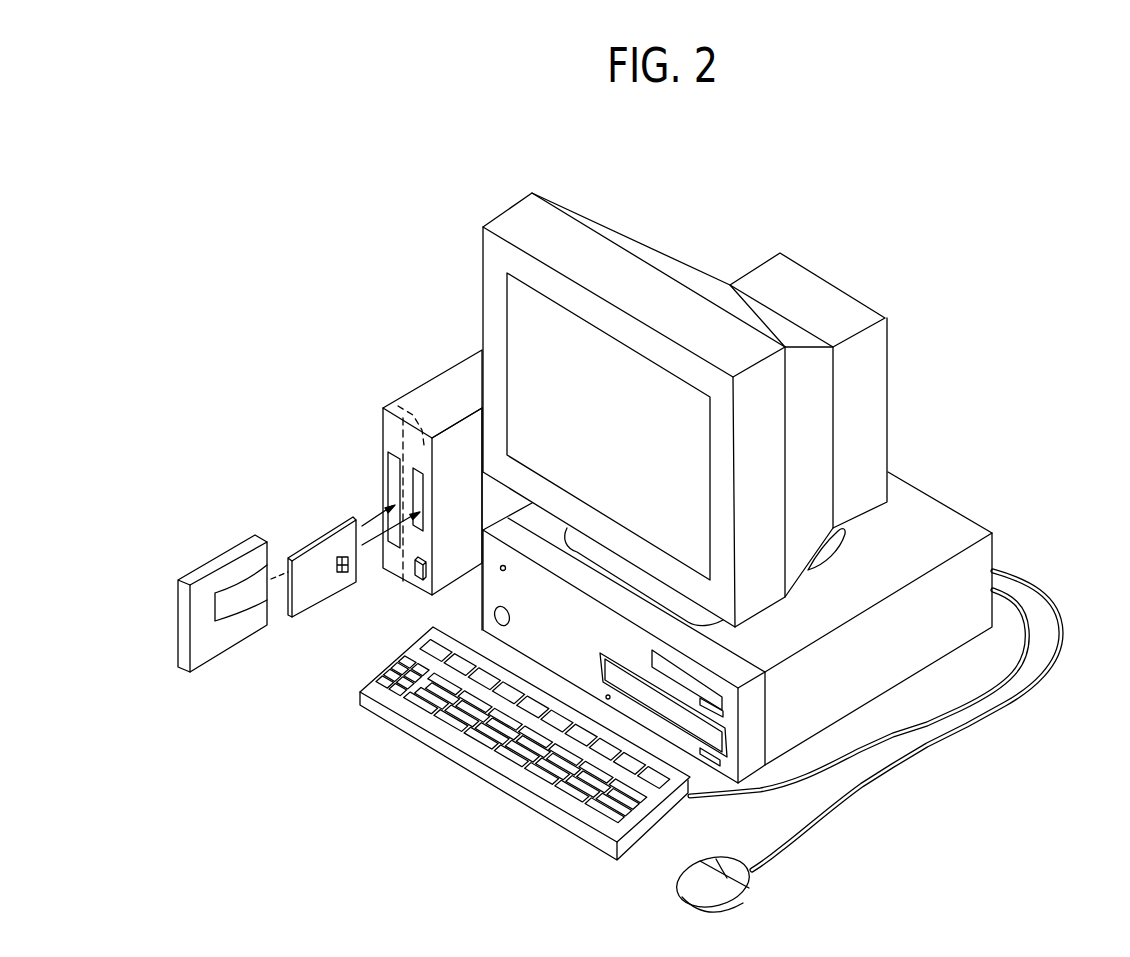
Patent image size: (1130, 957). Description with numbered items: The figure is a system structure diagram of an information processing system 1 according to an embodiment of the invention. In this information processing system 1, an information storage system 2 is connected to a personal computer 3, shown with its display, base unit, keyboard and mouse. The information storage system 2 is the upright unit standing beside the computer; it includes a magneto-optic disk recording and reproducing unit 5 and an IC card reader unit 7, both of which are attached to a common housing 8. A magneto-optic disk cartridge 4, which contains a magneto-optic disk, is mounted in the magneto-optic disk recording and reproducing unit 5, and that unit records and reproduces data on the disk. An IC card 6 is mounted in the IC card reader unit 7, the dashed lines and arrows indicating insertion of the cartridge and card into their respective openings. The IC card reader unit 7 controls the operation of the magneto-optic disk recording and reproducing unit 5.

The information processing system 1 is at (292, 198).
The information storage system 2 is at (425, 376).
The personal computer 3 is at (722, 262).
The magneto-optic disk cartridge 4 is at (220, 655).
The magneto-optic disk recording and reproducing unit 5 is at (378, 434).
The IC card 6 is at (323, 600).
The IC card reader unit 7 is at (398, 406).
The housing 8 is at (460, 380).